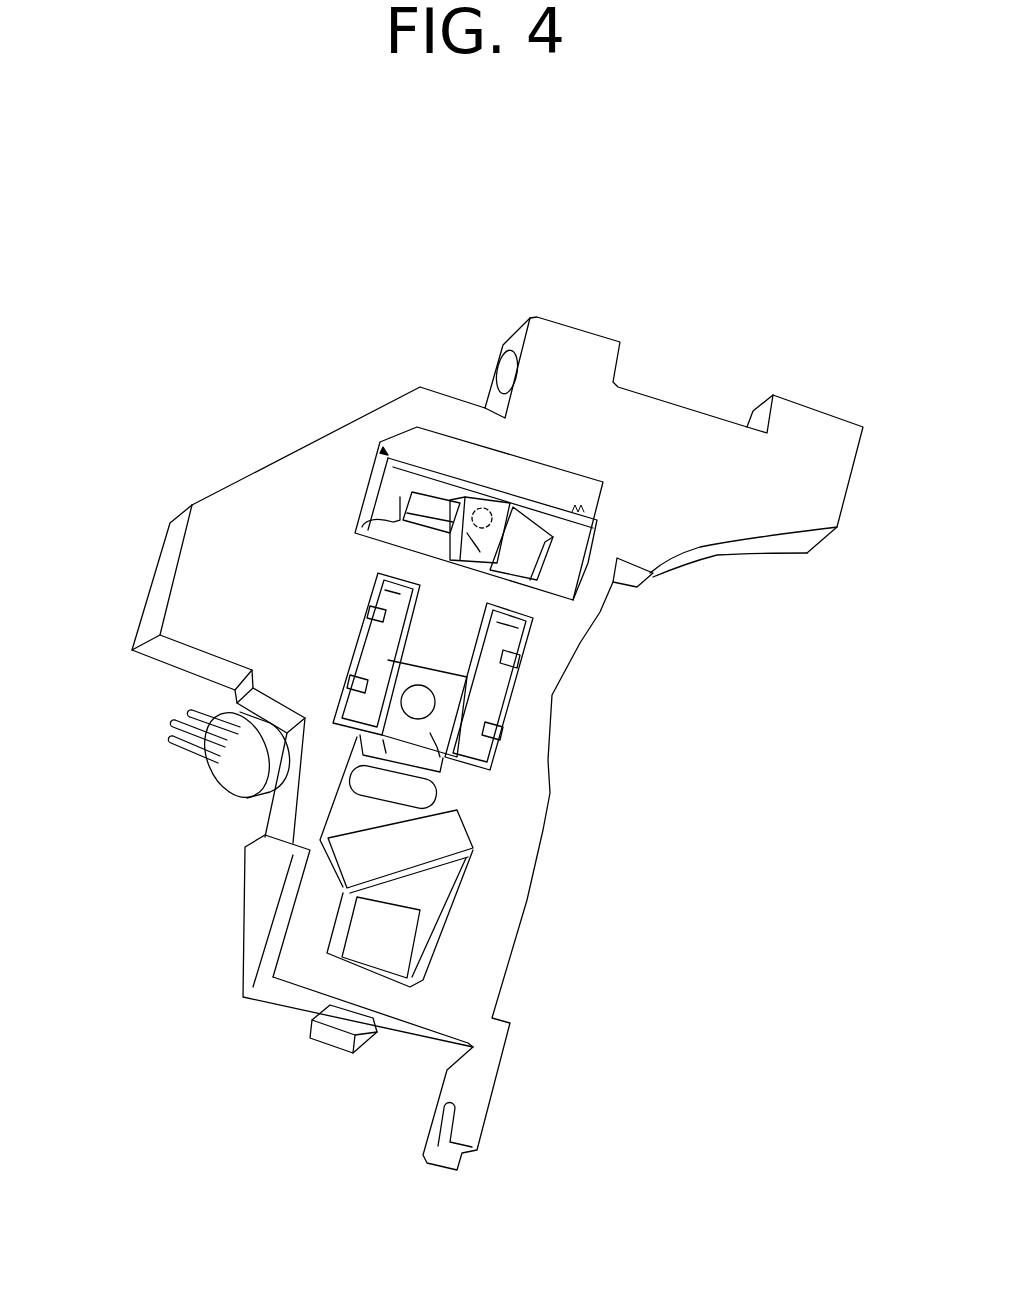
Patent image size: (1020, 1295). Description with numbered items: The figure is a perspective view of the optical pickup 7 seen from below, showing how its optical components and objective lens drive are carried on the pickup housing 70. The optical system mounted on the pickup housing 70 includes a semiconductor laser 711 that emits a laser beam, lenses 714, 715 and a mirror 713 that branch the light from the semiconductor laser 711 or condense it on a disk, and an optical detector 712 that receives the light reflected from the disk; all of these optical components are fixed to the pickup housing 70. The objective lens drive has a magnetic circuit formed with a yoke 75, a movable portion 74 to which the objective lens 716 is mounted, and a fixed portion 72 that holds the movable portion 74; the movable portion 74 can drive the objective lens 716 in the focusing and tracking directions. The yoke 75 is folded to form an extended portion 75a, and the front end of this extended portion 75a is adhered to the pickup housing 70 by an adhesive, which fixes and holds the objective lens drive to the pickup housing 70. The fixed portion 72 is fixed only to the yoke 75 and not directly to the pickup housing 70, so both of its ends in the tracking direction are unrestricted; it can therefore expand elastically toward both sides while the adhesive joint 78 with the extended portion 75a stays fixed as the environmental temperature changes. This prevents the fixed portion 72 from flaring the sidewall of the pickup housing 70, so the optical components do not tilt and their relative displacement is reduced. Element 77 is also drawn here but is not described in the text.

The optical pickup 7 is at (130, 250).
The pickup housing 70 is at (820, 434).
The fixed portion 72 is at (570, 570).
The movable portion 74 is at (425, 727).
The yoke 75 is at (383, 657).
The extended portion 75a is at (407, 512).
The sub block 77 is at (527, 497).
The adhesive joint 78 is at (478, 508).
The semiconductor laser 711 is at (232, 782).
The optical detector 712 is at (337, 1037).
The mirror 713 is at (437, 847).
The lens 714 is at (373, 935).
The lens 715 is at (423, 792).
The objective lens 716 is at (425, 703).